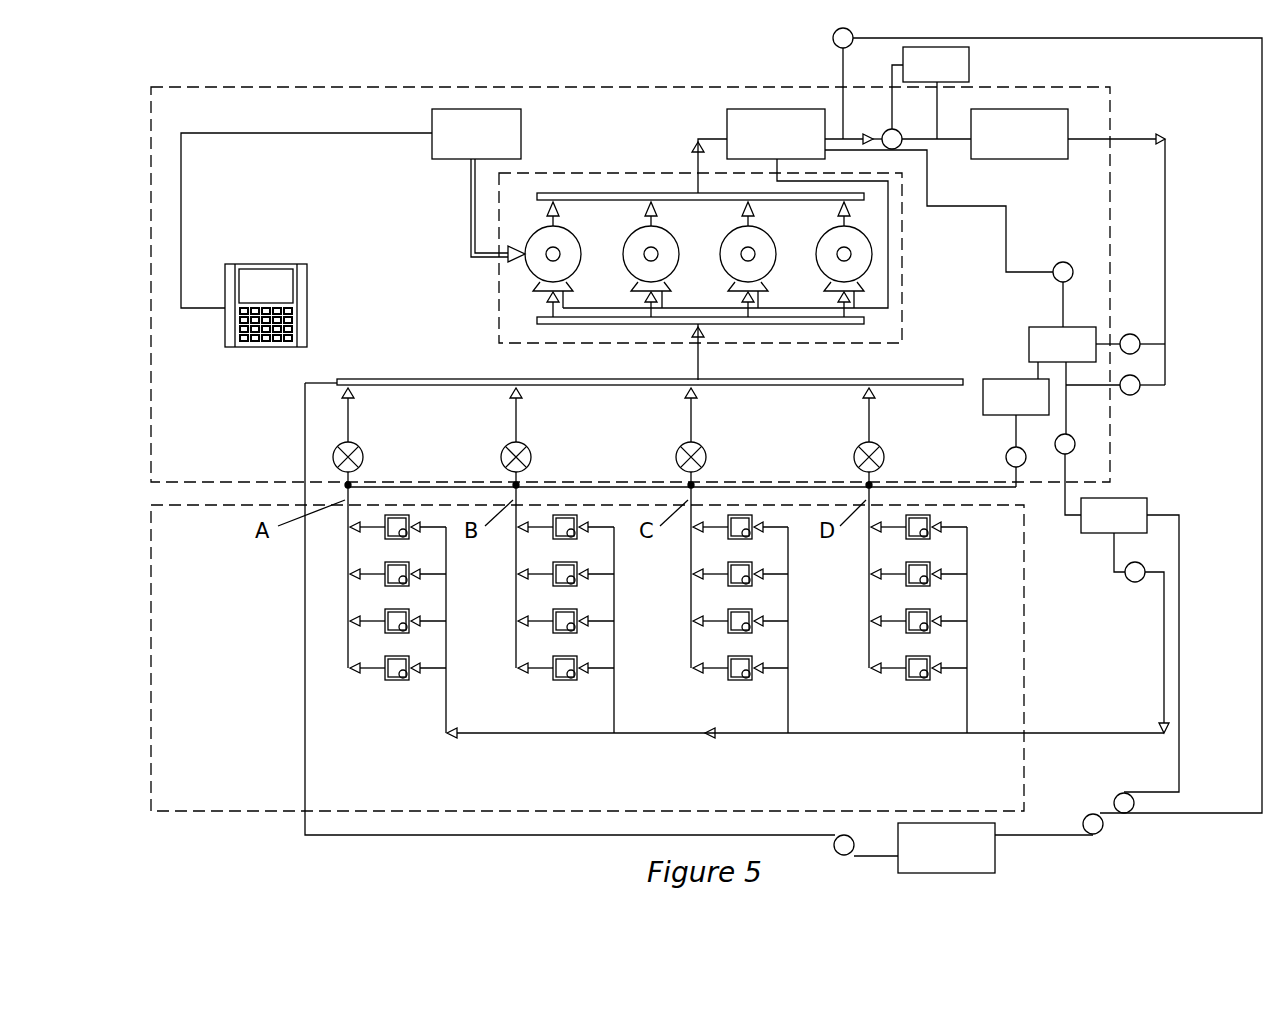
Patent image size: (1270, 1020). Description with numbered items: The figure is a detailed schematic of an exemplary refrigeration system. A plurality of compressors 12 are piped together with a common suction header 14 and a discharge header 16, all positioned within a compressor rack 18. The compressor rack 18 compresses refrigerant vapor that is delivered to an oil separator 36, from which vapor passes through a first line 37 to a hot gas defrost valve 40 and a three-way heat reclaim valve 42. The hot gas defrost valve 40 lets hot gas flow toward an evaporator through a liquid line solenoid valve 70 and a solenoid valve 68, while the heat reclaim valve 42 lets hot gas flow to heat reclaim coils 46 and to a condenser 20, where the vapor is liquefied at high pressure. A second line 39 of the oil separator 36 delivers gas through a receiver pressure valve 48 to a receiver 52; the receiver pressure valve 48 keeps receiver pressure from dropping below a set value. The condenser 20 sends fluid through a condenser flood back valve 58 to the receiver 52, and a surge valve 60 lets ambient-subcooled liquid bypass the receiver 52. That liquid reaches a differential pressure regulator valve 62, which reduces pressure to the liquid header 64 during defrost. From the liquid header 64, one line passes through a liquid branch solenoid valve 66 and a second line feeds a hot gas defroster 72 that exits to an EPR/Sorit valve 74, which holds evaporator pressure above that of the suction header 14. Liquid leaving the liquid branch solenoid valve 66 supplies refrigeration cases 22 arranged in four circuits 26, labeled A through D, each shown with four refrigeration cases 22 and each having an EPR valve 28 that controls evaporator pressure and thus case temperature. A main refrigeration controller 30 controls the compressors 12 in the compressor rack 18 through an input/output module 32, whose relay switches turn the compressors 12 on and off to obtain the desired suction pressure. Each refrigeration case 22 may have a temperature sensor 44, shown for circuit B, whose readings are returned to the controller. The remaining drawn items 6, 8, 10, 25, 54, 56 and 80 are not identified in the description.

The beverage dispensing system enclosure 6 is at (1098, 194).
The dispensing area enclosure 8 is at (1023, 660).
The beverage system 10 is at (1178, 186).
The compressor 12 is at (866, 254).
The suction header 14 is at (864, 320).
The discharge header 16 is at (608, 193).
The compressor rack 18 is at (902, 343).
The condenser 20 is at (1030, 159).
The refrigeration case 22 is at (399, 516).
The dispensing valve 25 is at (925, 538).
The circuit 26 is at (713, 574).
The EPR valve 28 is at (362, 452).
The main refrigeration controller 30 is at (270, 349).
The input/output module 32 is at (522, 130).
The oil separator 36 is at (740, 118).
The first line 37 is at (843, 77).
The second line 39 is at (953, 206).
The hot gas defrost valve 40 is at (833, 38).
The three-way heat reclaim valve 42 is at (898, 132).
The temperature sensor 44 is at (570, 540).
The heat reclaim coils 46 is at (969, 64).
The receiver pressure valve 48 is at (1066, 263).
The receiver 52 is at (1083, 328).
The supply unit 54 is at (1008, 385).
The valve 56 is at (1008, 448).
The condenser flood back valve 58 is at (1130, 334).
The surge valve 60 is at (1137, 392).
The differential pressure regulator valve 62 is at (1075, 444).
The liquid header 64 is at (1125, 499).
The liquid branch solenoid valve 66 is at (1133, 582).
The solenoid valve 68 is at (1117, 795).
The liquid line solenoid valve 70 is at (1085, 815).
The hot gas defroster 72 is at (988, 858).
The EPR/Sorit valve 74 is at (844, 835).
The junction 80 is at (348, 484).